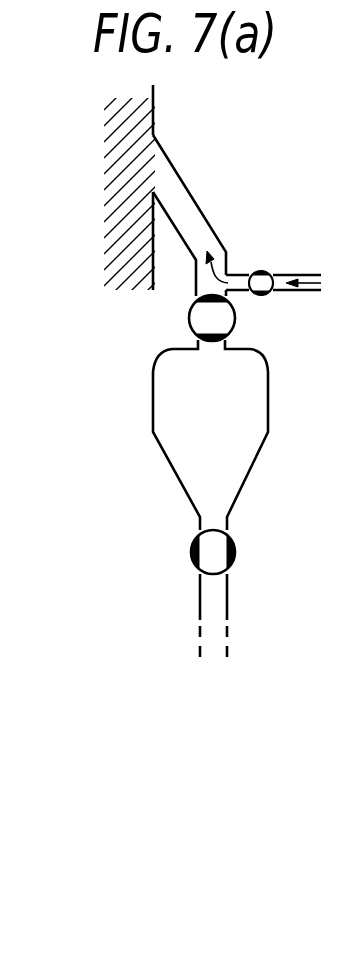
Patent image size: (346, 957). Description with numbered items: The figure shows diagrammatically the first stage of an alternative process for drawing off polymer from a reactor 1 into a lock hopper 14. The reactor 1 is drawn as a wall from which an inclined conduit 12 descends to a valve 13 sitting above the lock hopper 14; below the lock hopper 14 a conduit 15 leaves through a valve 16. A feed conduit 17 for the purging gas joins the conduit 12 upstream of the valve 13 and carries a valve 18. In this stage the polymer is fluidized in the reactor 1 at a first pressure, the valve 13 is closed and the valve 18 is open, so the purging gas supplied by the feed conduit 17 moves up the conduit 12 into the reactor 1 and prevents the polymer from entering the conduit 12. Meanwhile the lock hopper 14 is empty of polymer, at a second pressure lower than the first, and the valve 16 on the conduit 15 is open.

The reactor 1 is at (153, 108).
The conduit 12 is at (202, 205).
The valve 13 is at (236, 317).
The lock hopper 14 is at (268, 356).
The conduit 15 is at (228, 603).
The valve 16 is at (190, 550).
The feed conduit 17 is at (282, 274).
The valve 18 is at (261, 270).